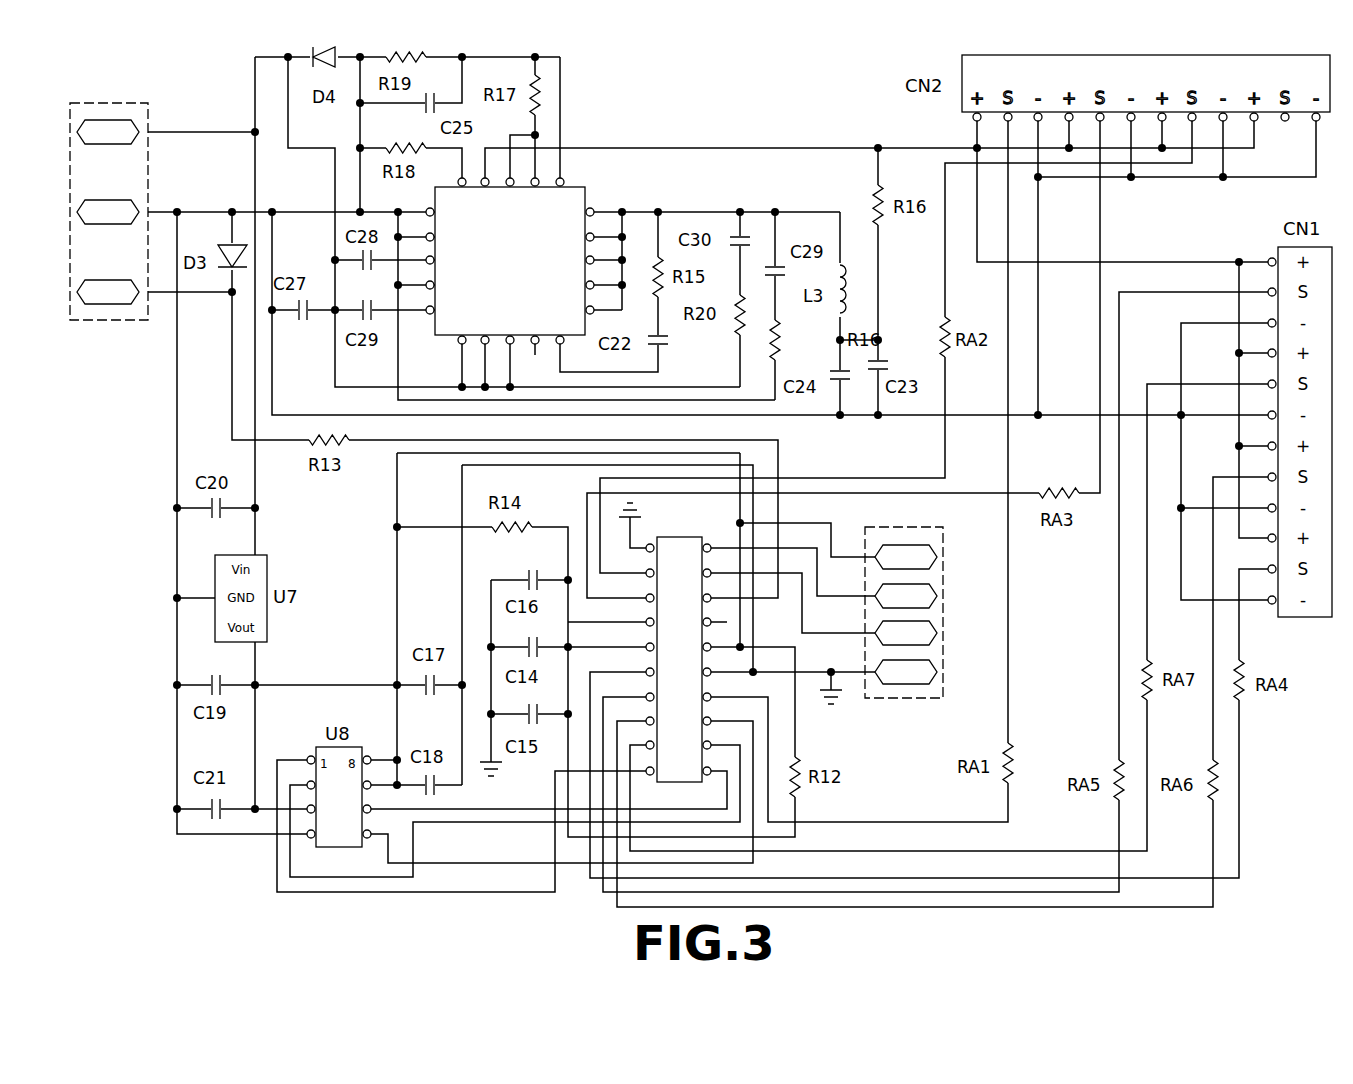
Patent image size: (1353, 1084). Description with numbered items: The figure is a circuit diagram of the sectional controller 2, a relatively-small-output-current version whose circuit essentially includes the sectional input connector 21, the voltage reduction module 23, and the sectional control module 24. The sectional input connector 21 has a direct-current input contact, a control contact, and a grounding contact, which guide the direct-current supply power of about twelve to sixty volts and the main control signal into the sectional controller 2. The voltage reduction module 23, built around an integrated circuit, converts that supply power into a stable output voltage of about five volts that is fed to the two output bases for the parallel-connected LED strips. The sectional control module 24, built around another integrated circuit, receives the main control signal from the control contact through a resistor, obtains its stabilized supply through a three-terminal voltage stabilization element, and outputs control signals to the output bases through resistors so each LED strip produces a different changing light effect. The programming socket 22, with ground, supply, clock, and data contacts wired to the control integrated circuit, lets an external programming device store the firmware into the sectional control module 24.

The sectional controller 2 is at (228, 128).
The sectional input connector 21 is at (118, 322).
The programming socket 22 is at (958, 607).
The voltage reduction module 23 is at (624, 192).
The sectional control module 24 is at (808, 730).